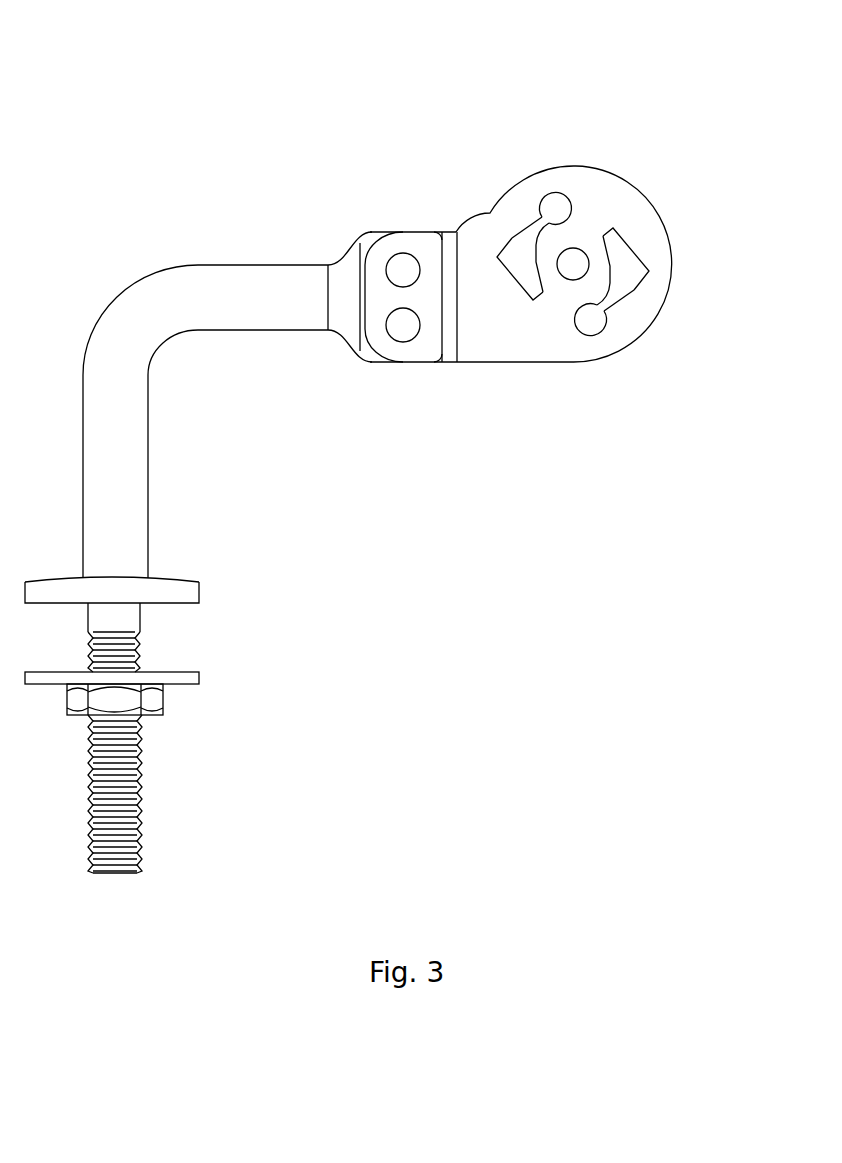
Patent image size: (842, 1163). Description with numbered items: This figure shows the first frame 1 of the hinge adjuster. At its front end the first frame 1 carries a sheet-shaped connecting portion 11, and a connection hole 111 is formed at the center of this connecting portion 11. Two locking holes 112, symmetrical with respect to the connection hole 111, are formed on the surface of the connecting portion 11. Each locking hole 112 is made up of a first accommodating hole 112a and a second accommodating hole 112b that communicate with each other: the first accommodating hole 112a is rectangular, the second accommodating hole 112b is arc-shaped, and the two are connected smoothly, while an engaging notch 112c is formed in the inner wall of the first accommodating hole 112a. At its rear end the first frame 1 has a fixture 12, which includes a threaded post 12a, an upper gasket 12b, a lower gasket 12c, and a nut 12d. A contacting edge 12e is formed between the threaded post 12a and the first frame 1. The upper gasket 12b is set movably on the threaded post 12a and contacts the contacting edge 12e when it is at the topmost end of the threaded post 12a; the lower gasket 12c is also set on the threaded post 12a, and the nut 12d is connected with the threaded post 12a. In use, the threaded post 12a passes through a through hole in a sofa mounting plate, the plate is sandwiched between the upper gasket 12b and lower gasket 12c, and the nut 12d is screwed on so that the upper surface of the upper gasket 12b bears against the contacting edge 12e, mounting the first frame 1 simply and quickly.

The first frame 1 is at (113, 38).
The connecting portion 11 is at (657, 316).
The connection hole 111 is at (573, 264).
The locking hole 112 is at (558, 67).
The first accommodating hole 112a is at (515, 270).
The second accommodating hole 112b is at (543, 213).
The engaging notch 112c is at (510, 241).
The fixture 12 is at (300, 565).
The threaded post 12a is at (113, 750).
The upper gasket 12b is at (125, 595).
The lower gasket 12c is at (177, 677).
The nut 12d is at (115, 700).
The contacting edge 12e is at (110, 577).